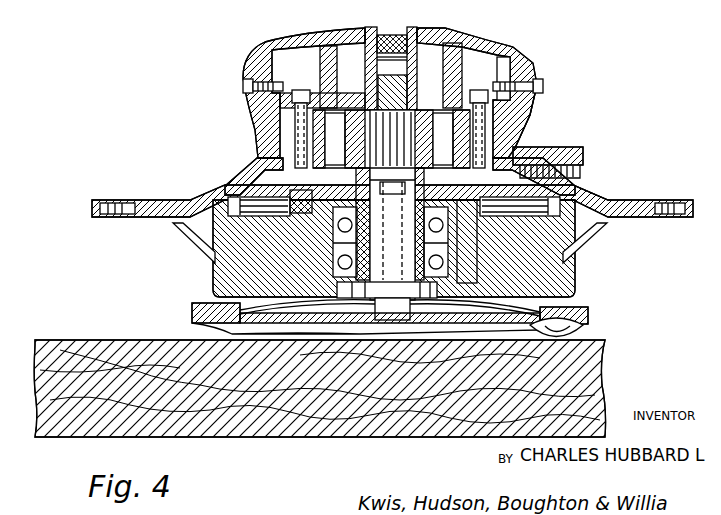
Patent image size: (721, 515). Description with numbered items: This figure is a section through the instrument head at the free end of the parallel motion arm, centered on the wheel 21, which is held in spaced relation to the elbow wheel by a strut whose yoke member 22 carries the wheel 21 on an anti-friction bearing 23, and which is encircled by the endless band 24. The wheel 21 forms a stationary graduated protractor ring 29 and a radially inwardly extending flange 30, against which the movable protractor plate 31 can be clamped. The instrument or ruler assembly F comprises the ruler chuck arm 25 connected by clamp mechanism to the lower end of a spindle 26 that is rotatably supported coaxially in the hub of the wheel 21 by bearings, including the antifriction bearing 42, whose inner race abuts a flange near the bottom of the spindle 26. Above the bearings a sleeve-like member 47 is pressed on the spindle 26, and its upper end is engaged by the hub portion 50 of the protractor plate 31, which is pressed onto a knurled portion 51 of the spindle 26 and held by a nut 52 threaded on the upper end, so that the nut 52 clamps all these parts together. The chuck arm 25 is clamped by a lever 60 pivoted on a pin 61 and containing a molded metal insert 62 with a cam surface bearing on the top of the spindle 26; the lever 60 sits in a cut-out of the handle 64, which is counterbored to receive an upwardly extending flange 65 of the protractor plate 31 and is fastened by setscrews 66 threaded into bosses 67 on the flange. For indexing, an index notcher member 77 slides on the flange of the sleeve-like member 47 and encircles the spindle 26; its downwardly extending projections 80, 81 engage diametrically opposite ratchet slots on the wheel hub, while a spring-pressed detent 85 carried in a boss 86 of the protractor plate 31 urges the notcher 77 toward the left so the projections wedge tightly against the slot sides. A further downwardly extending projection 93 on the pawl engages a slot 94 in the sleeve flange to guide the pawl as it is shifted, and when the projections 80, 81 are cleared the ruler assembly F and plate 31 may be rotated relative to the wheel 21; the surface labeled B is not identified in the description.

The wheel 21 is at (575, 290).
The yoke member 22 is at (198, 252).
The anti-friction bearing 23 is at (285, 242).
The endless band 24 is at (578, 266).
The ruler chuck arm 25 is at (583, 340).
The spindle 26 is at (390, 231).
The protractor ring 29 is at (682, 198).
The radially inwardly extending flange 30 is at (222, 184).
The movable protractor plate 31 is at (640, 198).
The antifriction bearing 42 is at (408, 270).
The sleeve-like member 47 is at (392, 205).
The hub portion 50 is at (345, 136).
The knurled portion 51 is at (433, 140).
The nut 52 is at (444, 88).
The lever 60 is at (377, 25).
The pin 61 is at (453, 28).
The metal insert 62 is at (378, 82).
The handle 64 is at (251, 64).
The upwardly extending flange 65 is at (532, 114).
The setscrews 66 is at (243, 86).
The bosses 67 is at (516, 46).
The index notcher member 77 is at (328, 139).
The downwardly extending projection 80 is at (290, 195).
The downwardly extending projection 81 is at (466, 241).
The spring-pressed detent 85 is at (526, 150).
The boss 86 is at (580, 150).
The downwardly extending projection 93 is at (406, 198).
The slot 94 is at (428, 166).
The workpiece B is at (120, 340).
The ruler assembly F is at (197, 325).